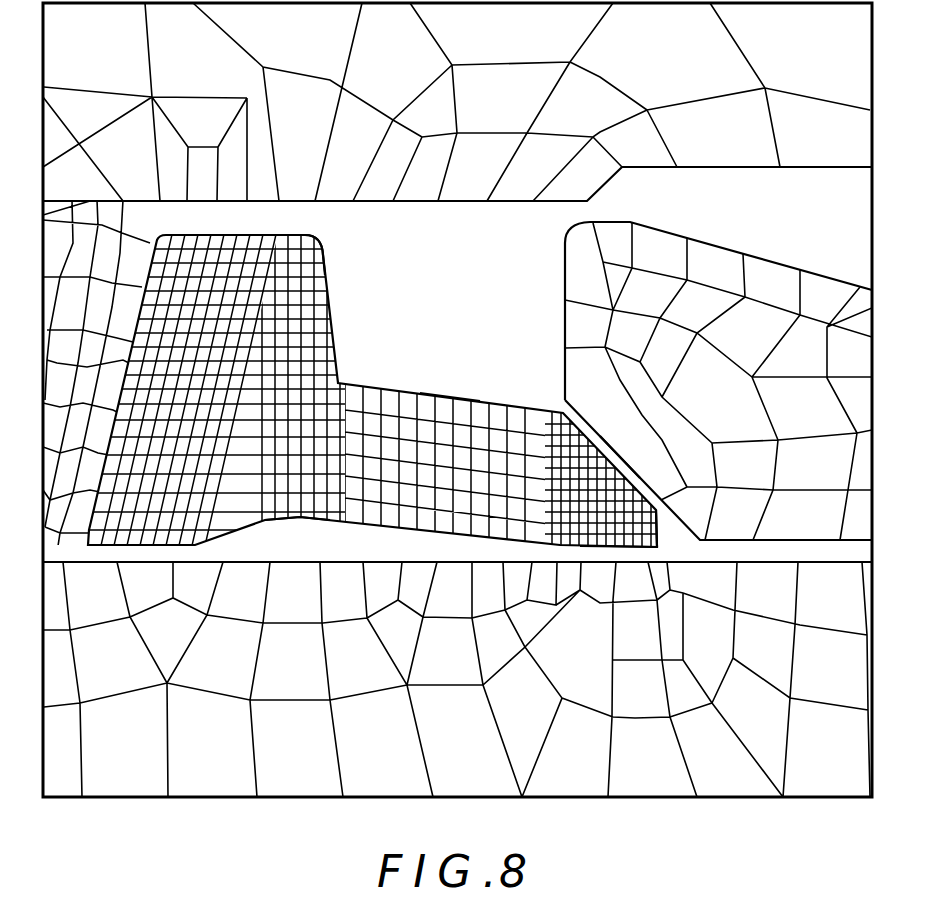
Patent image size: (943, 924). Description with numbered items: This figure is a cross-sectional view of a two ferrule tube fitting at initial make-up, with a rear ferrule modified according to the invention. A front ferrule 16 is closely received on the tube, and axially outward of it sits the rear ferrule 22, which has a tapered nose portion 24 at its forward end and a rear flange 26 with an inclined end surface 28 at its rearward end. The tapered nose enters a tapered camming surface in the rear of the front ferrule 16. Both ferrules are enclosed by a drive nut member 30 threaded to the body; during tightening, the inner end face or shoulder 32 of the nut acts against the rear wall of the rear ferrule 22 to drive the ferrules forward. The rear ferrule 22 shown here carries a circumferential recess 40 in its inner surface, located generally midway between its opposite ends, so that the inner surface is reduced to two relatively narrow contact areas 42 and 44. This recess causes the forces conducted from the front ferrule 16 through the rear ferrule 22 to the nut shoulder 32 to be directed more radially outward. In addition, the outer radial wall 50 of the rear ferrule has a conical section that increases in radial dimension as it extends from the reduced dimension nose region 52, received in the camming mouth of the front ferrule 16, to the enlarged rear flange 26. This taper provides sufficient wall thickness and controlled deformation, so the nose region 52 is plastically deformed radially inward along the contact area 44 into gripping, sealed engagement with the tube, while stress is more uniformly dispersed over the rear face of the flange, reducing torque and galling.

The front ferrule 16 is at (706, 260).
The rear ferrule 22 is at (386, 372).
The tapered nose portion 24 is at (620, 456).
The rear flange 26 is at (323, 272).
The inclined end surface 28 is at (132, 302).
The drive nut member 30 is at (147, 177).
The inner end face, flange, or shoulder of the nut 32 is at (58, 524).
The circumferential recess 40 is at (287, 518).
The contact area 42 is at (145, 547).
The contact area 44 is at (620, 550).
The outer radial wall 50 is at (465, 399).
The rear chamfer region / reduced dimension nose region 52 is at (678, 523).